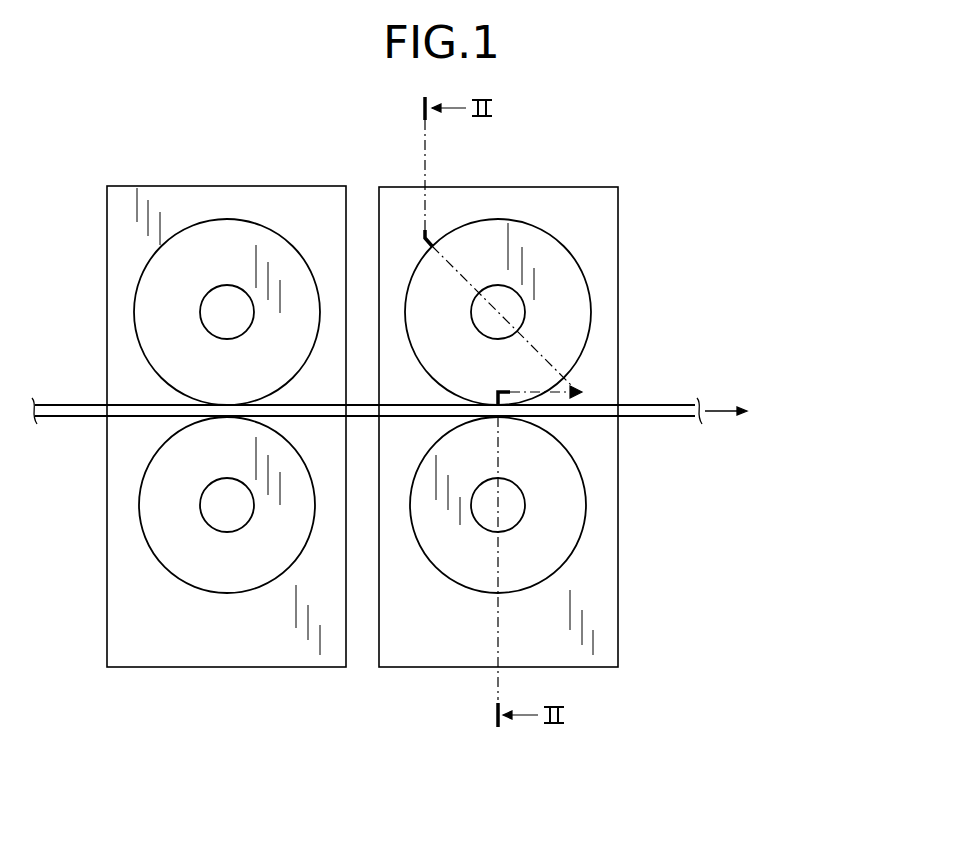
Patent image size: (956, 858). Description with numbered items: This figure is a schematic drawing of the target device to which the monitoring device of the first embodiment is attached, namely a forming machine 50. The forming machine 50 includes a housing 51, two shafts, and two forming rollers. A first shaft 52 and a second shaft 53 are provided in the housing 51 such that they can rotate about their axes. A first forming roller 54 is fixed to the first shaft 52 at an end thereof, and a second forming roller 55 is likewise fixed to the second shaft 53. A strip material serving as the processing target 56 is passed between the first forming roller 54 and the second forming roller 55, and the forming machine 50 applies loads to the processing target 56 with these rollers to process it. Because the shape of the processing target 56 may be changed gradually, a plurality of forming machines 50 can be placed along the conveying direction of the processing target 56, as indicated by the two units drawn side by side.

The forming machine 50 is at (186, 173).
The housing 51 is at (125, 227).
The first shaft 52 is at (215, 307).
The second shaft 53 is at (215, 503).
The first forming roller 54 is at (175, 356).
The second forming roller 55 is at (175, 545).
The processing target 56 is at (635, 407).